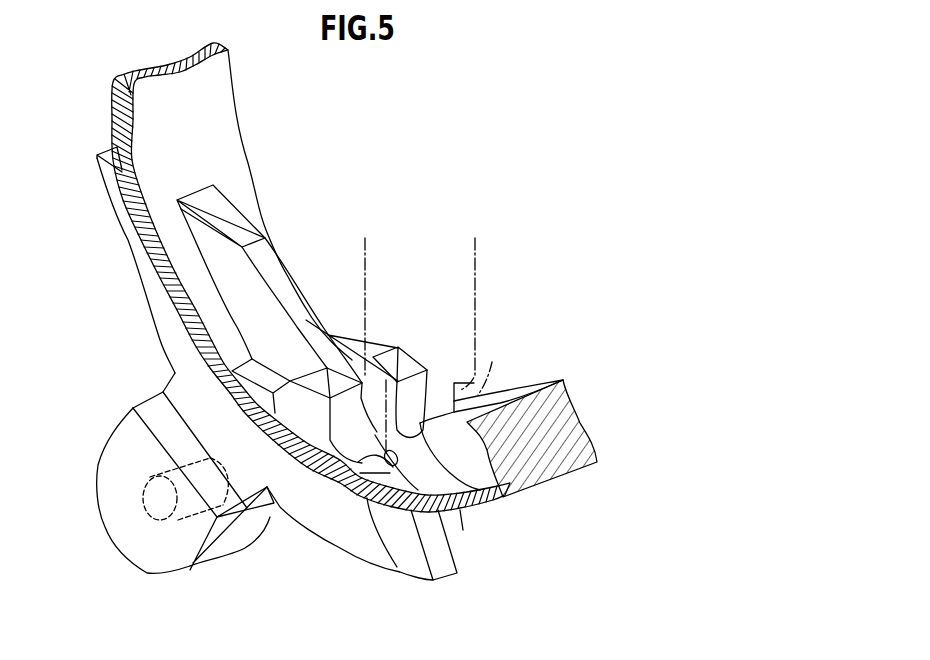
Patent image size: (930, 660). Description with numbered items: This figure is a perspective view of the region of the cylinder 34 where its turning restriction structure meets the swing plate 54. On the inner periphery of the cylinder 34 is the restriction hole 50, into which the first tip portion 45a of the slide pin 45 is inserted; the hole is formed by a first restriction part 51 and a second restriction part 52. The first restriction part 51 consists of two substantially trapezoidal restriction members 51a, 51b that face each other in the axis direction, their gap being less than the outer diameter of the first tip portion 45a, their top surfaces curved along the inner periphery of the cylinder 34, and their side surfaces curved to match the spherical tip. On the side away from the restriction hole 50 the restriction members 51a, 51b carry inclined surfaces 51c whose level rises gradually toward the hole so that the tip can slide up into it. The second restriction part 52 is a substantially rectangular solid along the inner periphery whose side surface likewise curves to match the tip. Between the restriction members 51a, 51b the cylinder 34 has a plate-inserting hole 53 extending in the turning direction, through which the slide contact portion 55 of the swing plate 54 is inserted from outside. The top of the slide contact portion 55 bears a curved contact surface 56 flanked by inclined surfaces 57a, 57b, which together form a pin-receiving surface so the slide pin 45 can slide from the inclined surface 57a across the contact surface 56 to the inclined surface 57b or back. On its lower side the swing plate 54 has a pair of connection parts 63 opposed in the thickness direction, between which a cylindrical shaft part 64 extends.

The cylinder 34 is at (487, 508).
The slide pin 45 is at (475, 260).
The first tip portion 45a is at (492, 362).
The restriction hole 50 is at (461, 385).
The first restriction part 51 is at (482, 195).
The restriction member 51a is at (398, 347).
The restriction member 51b is at (350, 352).
The inclined surface 51c is at (277, 367).
The second restriction part 52 is at (537, 383).
The plate-inserting hole 53 is at (400, 572).
The swing plate 54 is at (340, 548).
The slide contact portion 55 is at (233, 256).
The contact surface 56 is at (280, 283).
The inclined surface 57a is at (460, 577).
The inclined surface 57b is at (223, 223).
The connection part 63 is at (233, 537).
The cylindrical shaft part 64 is at (177, 520).